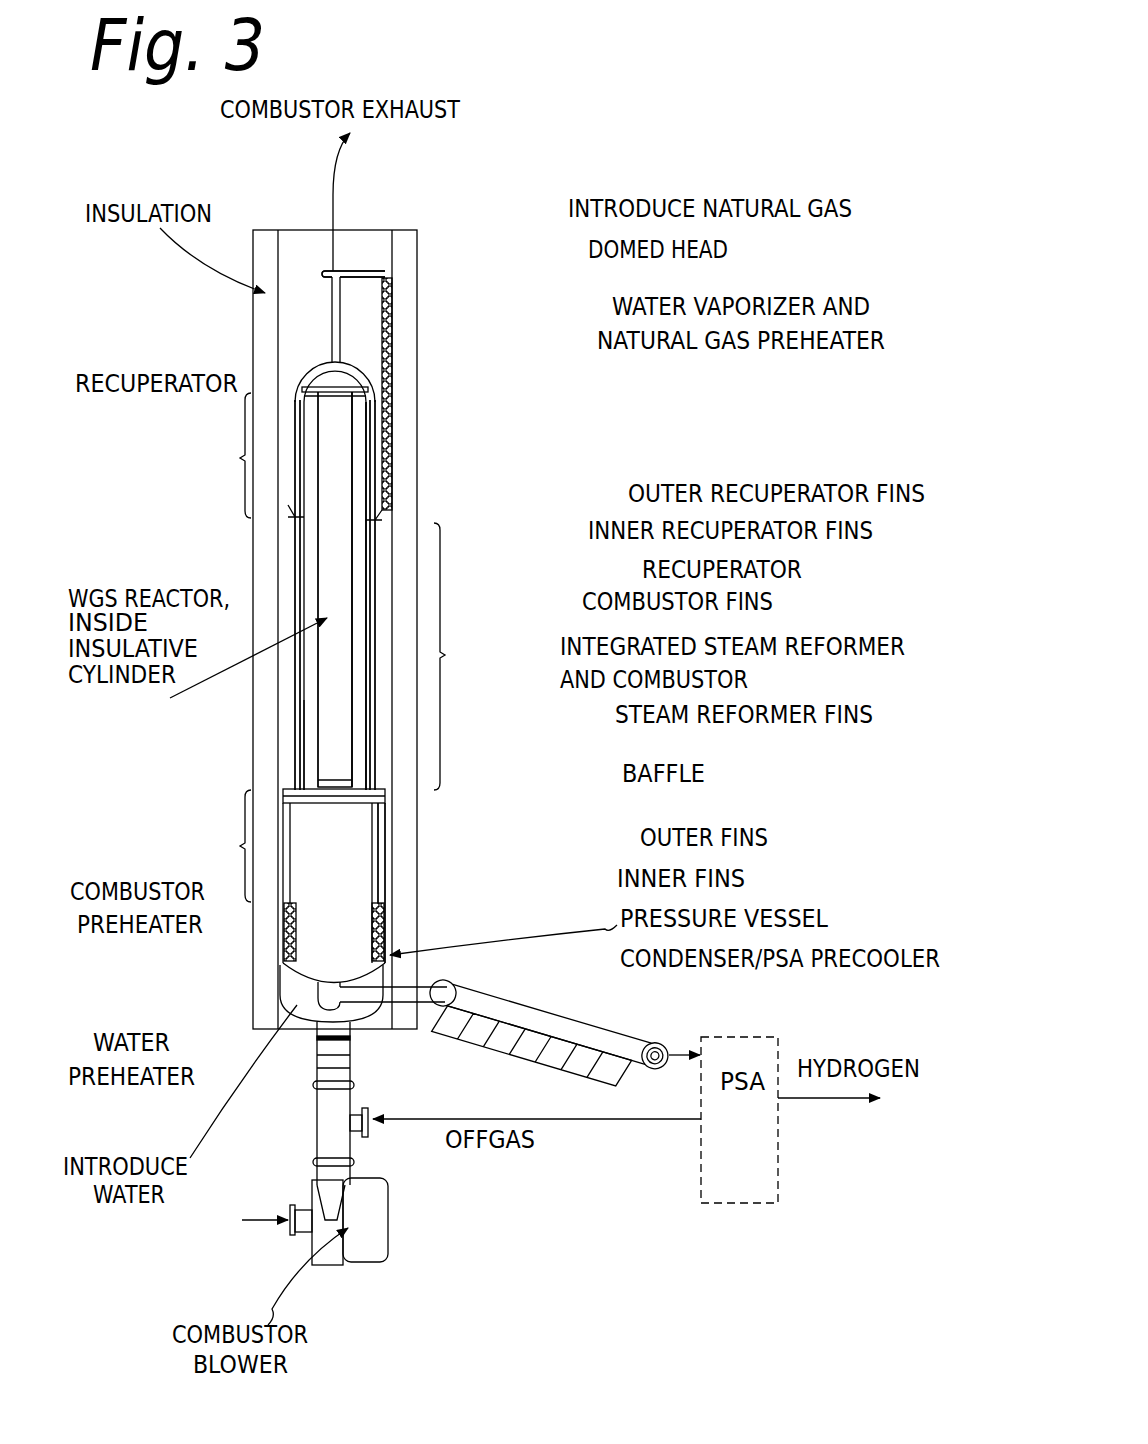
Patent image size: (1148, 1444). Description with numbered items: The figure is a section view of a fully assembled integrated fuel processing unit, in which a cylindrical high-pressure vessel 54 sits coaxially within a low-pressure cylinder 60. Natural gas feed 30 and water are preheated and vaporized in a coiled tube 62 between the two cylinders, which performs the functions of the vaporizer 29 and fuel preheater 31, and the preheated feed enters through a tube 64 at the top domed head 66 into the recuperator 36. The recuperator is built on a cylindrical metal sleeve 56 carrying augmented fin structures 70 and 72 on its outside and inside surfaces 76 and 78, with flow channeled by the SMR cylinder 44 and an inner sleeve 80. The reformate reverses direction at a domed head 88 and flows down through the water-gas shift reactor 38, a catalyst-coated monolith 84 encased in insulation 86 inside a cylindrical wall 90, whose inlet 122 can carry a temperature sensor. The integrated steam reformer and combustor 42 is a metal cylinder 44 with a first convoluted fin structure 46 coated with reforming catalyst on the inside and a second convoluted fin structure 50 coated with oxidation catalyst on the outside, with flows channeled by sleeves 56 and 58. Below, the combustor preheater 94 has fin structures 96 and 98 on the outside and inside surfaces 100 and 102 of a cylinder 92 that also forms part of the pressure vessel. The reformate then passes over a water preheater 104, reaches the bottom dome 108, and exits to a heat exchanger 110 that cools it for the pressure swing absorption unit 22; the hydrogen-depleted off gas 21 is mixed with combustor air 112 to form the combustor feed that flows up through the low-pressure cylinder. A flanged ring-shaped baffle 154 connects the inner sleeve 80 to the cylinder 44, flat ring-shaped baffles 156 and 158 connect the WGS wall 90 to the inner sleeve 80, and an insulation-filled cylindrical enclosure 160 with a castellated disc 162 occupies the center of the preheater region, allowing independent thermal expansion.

The hydrogen-depleted off gas 21 is at (603, 1122).
The Pressure Swing Absorption (PSA) 22 is at (749, 1160).
The vaporizer 29 is at (398, 378).
The fuel preheater 31 is at (518, 572).
The natural gas feed 30 is at (340, 310).
The recuperative heat exchanger 36 is at (240, 458).
The water-gas shift (WGS) reactor 38 is at (325, 657).
The integrated steam reformer and combustor 42 is at (445, 655).
The metal cylinder 44 is at (287, 592).
The first convoluted fin structure 46 is at (378, 668).
The second convoluted fin structure 50 is at (390, 603).
The pressure vessel 54 is at (312, 356).
The cylindrical metal sleeve 56 is at (302, 553).
The cylindrical metal sleeve 58 is at (290, 580).
The low-pressure cylinder 60 is at (278, 553).
The coiled tube 62 is at (365, 266).
The tube 64 is at (398, 323).
The top domed head 66 is at (346, 377).
The fin structure 70 is at (392, 492).
The fin structure 72 is at (387, 512).
The outside surface 76 is at (392, 457).
The inside surface 78 is at (374, 480).
The inner sleeve 80 is at (373, 438).
The catalyst-coated monolith 84 is at (307, 705).
The insulation 86 is at (337, 733).
The domed head 88 is at (372, 368).
The cylindrical wall 90 is at (303, 783).
The cylinder 92 is at (383, 835).
The combustor preheater 94 is at (240, 846).
The fin structure 96 is at (382, 862).
The fin structure 98 is at (377, 888).
The outside surface 100 is at (382, 850).
The inside surface 102 is at (368, 800).
The water preheater 104 is at (280, 967).
The bottom dome 108 is at (318, 986).
The heat exchanger 110 is at (568, 1012).
The combustor air 112 is at (268, 1222).
The inlet 122 is at (318, 383).
The ring-shaped baffle 154 is at (381, 818).
The ring-shaped baffle 156 is at (296, 803).
The ring-shaped baffle 158 is at (302, 390).
The cylindrical enclosure 160 is at (282, 941).
The castellated disc 162 is at (300, 978).